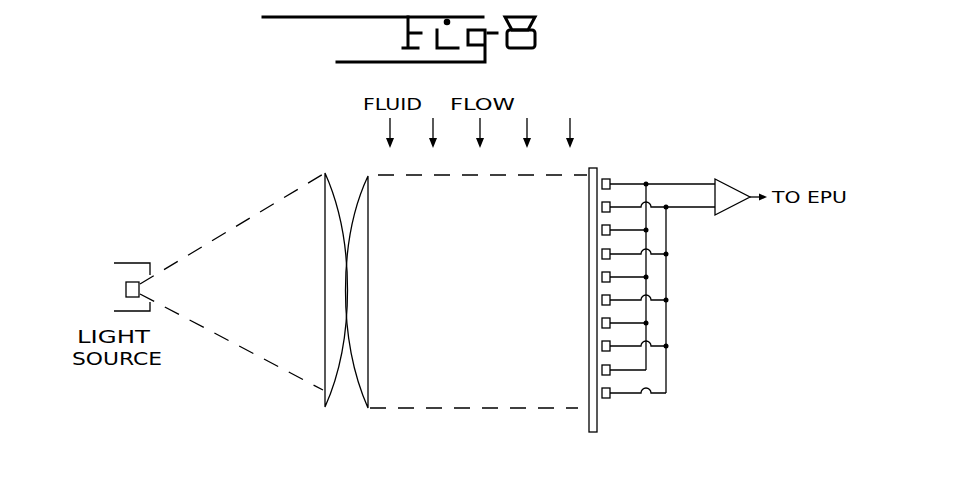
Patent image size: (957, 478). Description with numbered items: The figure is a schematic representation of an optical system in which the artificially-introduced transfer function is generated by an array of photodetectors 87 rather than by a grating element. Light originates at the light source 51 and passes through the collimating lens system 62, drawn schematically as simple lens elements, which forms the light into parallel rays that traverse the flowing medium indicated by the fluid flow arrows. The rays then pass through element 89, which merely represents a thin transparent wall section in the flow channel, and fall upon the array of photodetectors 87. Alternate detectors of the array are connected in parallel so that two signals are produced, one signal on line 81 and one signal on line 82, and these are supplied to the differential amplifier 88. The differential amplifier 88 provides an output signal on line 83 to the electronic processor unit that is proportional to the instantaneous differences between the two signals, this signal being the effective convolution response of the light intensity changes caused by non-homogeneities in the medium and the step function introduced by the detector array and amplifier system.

The light source 51 is at (125, 290).
The collimating lens system 62 is at (352, 174).
The thin transparent wall section 89 is at (597, 168).
The array of photodetectors 87 is at (600, 232).
The line 81 is at (678, 183).
The line 82 is at (689, 211).
The differential amplifier 88 is at (733, 183).
The line 83 is at (757, 201).